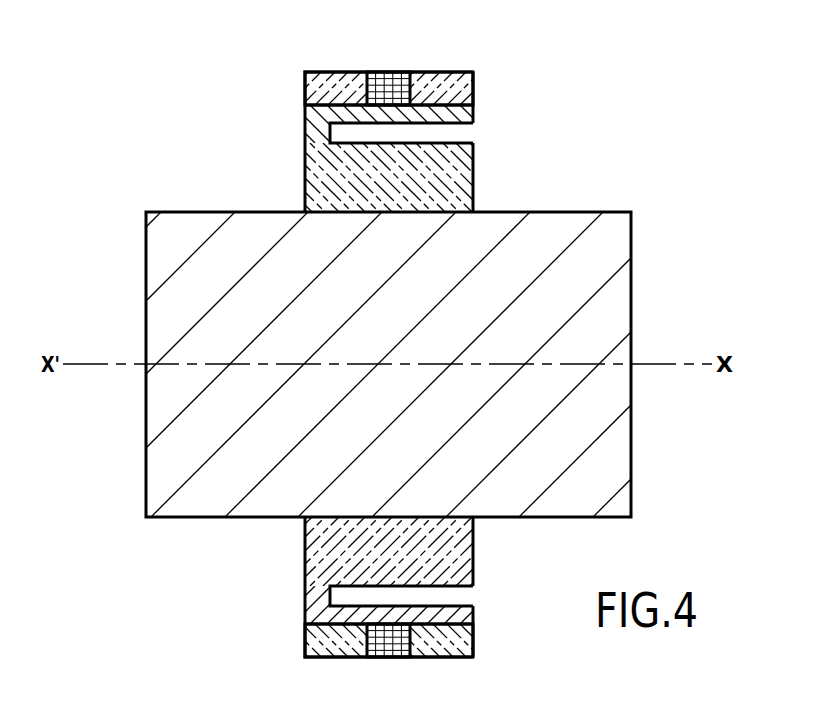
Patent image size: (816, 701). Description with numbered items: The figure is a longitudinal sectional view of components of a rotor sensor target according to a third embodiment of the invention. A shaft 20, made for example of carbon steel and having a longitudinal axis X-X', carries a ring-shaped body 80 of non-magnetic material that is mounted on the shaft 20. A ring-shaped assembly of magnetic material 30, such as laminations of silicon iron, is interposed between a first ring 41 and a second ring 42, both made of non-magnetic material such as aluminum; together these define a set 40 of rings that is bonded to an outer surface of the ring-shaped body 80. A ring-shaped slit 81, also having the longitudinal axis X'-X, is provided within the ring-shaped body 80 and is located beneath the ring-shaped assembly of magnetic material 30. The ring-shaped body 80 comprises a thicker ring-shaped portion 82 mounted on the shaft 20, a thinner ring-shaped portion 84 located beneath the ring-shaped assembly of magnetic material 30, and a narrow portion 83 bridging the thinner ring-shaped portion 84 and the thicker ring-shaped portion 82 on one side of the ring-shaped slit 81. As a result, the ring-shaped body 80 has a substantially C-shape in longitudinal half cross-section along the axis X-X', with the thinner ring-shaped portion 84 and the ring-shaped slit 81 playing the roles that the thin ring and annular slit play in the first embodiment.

The shaft 20 is at (157, 259).
The set of rings 40 is at (301, 68).
The first ring 41 is at (332, 87).
The ring-shaped assembly of magnetic material 30 is at (387, 88).
The second ring 42 is at (436, 85).
The ring-shaped body 80 is at (298, 173).
The ring-shaped slit 81 is at (463, 127).
The thicker ring-shaped portion 82 is at (465, 183).
The narrow portion 83 is at (320, 135).
The thinner ring-shaped portion 84 is at (427, 115).